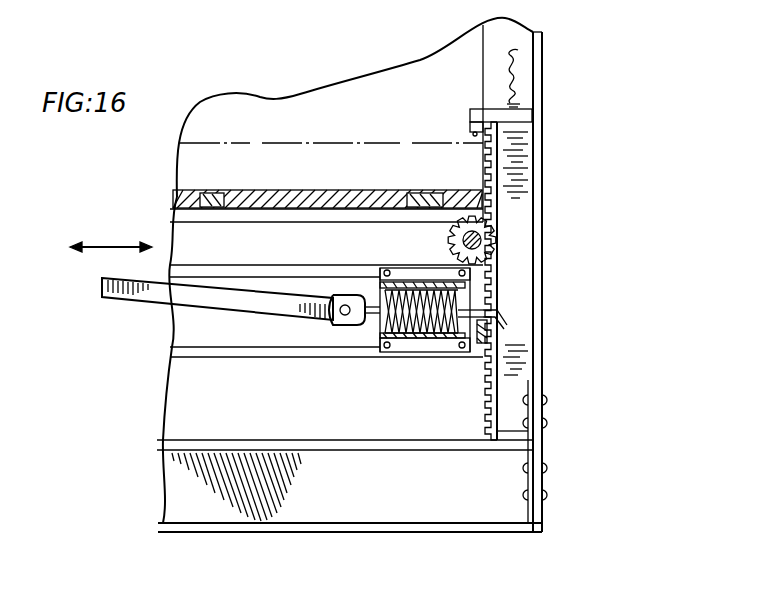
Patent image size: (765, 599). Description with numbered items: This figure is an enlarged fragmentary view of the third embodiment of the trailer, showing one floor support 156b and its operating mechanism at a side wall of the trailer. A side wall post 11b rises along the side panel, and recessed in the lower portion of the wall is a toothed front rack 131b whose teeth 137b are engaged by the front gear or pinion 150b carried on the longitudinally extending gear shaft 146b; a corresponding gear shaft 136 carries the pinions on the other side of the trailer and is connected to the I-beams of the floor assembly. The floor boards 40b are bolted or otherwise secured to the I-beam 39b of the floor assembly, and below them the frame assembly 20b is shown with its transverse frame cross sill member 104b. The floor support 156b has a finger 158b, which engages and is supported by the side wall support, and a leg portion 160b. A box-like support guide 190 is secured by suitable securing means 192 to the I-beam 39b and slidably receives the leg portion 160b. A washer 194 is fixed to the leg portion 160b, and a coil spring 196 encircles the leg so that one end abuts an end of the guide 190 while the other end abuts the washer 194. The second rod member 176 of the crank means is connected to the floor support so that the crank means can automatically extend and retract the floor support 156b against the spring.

The side wall post 11b is at (515, 35).
The front rack 131b is at (530, 135).
The front gear or pinion 150b is at (494, 230).
The gear shaft 146b is at (488, 237).
The floor board 40b is at (302, 190).
The I-beam 39b is at (200, 333).
The second rod member 176 is at (140, 297).
The support guide 190 is at (399, 268).
The coil spring 196 is at (378, 326).
The securing means 192 is at (468, 275).
The washer 194 is at (468, 296).
The leg portion 160b is at (421, 342).
The finger 158b is at (507, 317).
The floor support 156b is at (505, 328).
The teeth 137b is at (498, 397).
The gear shaft 136 is at (485, 415).
The frame cross sill member 104b is at (307, 490).
The frame assembly 20b is at (150, 528).